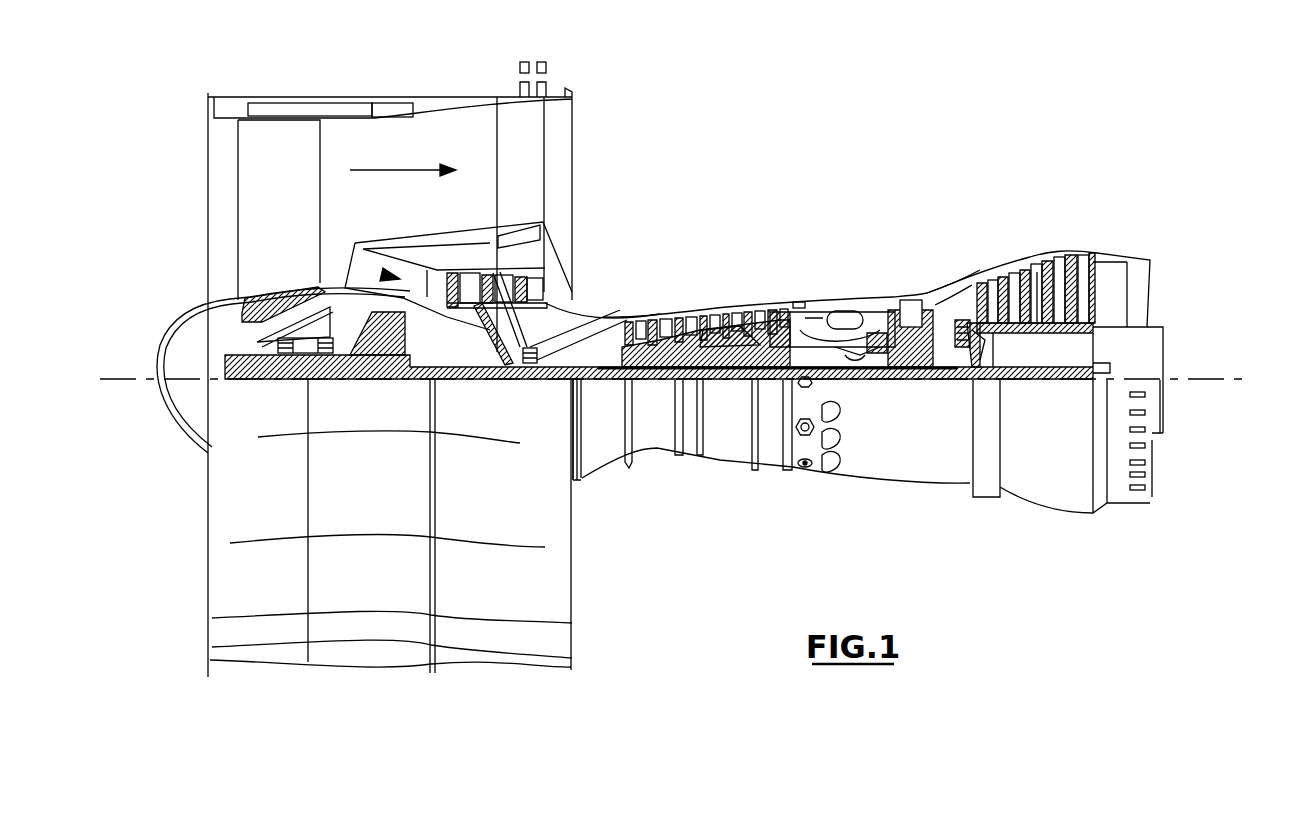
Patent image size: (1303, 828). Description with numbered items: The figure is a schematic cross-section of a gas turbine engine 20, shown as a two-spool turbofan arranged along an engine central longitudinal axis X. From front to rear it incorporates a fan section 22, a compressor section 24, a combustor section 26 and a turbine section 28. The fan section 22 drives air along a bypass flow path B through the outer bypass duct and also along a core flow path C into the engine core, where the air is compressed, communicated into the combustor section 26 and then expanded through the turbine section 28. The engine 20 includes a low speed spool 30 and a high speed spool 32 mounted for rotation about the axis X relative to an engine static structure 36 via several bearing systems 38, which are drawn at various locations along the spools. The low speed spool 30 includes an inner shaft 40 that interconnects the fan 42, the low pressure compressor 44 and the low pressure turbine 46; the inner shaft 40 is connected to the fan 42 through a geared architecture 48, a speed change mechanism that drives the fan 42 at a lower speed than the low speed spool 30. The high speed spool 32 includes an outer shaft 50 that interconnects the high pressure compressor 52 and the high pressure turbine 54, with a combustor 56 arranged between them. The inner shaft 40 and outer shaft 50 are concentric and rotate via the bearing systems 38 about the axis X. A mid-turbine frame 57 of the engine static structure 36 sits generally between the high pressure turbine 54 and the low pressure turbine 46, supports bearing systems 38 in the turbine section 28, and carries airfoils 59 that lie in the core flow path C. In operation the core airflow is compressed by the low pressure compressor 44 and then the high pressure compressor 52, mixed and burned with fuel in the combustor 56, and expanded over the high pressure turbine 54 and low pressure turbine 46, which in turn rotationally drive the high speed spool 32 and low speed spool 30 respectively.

The gas turbine engine 20 is at (848, 150).
The fan section 22 is at (417, 72).
The compressor section 24 is at (430, 218).
The combustor section 26 is at (882, 218).
The turbine section 28 is at (893, 218).
The low speed spool 30 is at (731, 380).
The high speed spool 32 is at (773, 317).
The engine static structure 36 is at (771, 460).
The bearing systems 38 is at (288, 368).
The inner shaft 40 is at (593, 380).
The fan 42 is at (294, 224).
The low pressure compressor 44 is at (507, 282).
The low pressure turbine 46 is at (1037, 272).
The geared architecture 48 is at (402, 362).
The outer shaft 50 is at (852, 375).
The high pressure compressor 52 is at (705, 347).
The high pressure turbine 54 is at (910, 300).
The combustor 56 is at (845, 322).
The mid-turbine frame 57 is at (950, 292).
The airfoils 59 is at (970, 330).
The bypass flow path B is at (390, 170).
The core flow path C is at (385, 274).
The engine central longitudinal axis X is at (1243, 378).